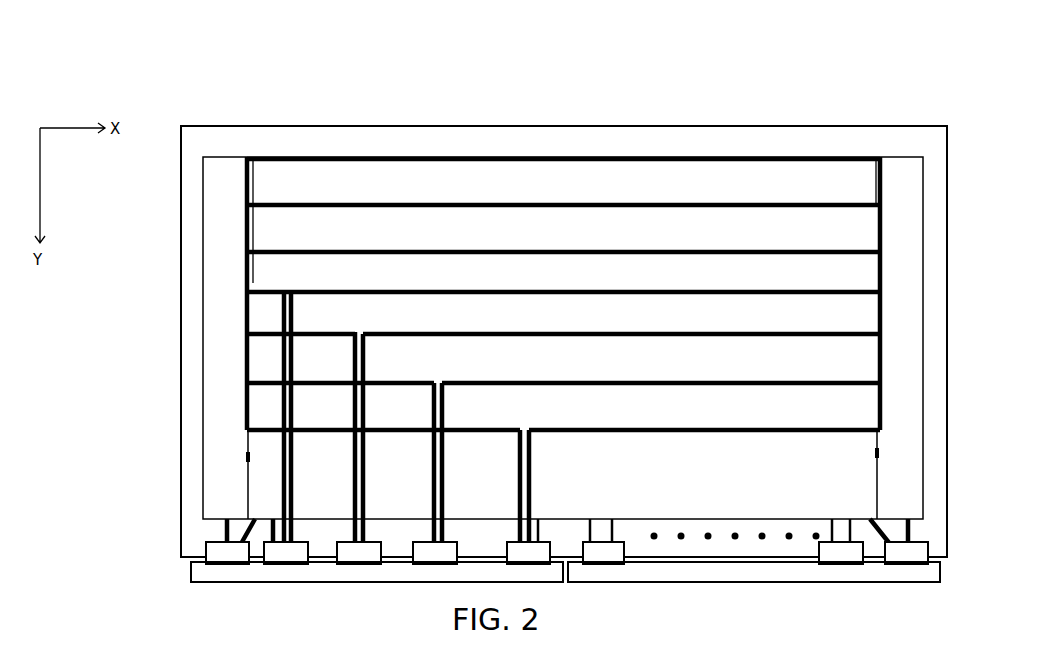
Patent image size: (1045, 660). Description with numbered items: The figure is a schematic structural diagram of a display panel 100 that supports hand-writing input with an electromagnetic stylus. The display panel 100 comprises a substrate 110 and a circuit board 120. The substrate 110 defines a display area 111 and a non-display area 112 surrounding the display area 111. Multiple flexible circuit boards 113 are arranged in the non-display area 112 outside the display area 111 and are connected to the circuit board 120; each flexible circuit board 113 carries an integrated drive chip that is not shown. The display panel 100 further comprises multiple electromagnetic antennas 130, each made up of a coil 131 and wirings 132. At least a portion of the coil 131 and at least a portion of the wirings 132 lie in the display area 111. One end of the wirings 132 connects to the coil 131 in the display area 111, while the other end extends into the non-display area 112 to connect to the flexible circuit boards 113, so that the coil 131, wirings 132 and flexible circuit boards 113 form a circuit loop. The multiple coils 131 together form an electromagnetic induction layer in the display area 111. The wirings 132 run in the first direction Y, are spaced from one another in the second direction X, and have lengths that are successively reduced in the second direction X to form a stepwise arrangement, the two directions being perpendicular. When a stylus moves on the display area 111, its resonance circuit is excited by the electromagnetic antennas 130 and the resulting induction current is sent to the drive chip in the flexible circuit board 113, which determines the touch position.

The display panel 100 is at (148, 90).
The substrate 110 is at (265, 55).
The display area 111 is at (308, 180).
The non-display area 112 is at (243, 127).
The flexible circuit boards 113 is at (210, 552).
The circuit board 120 is at (192, 576).
The electromagnetic antennas 130 is at (127, 297).
The coil 131 is at (267, 333).
The wirings 132 is at (350, 370).